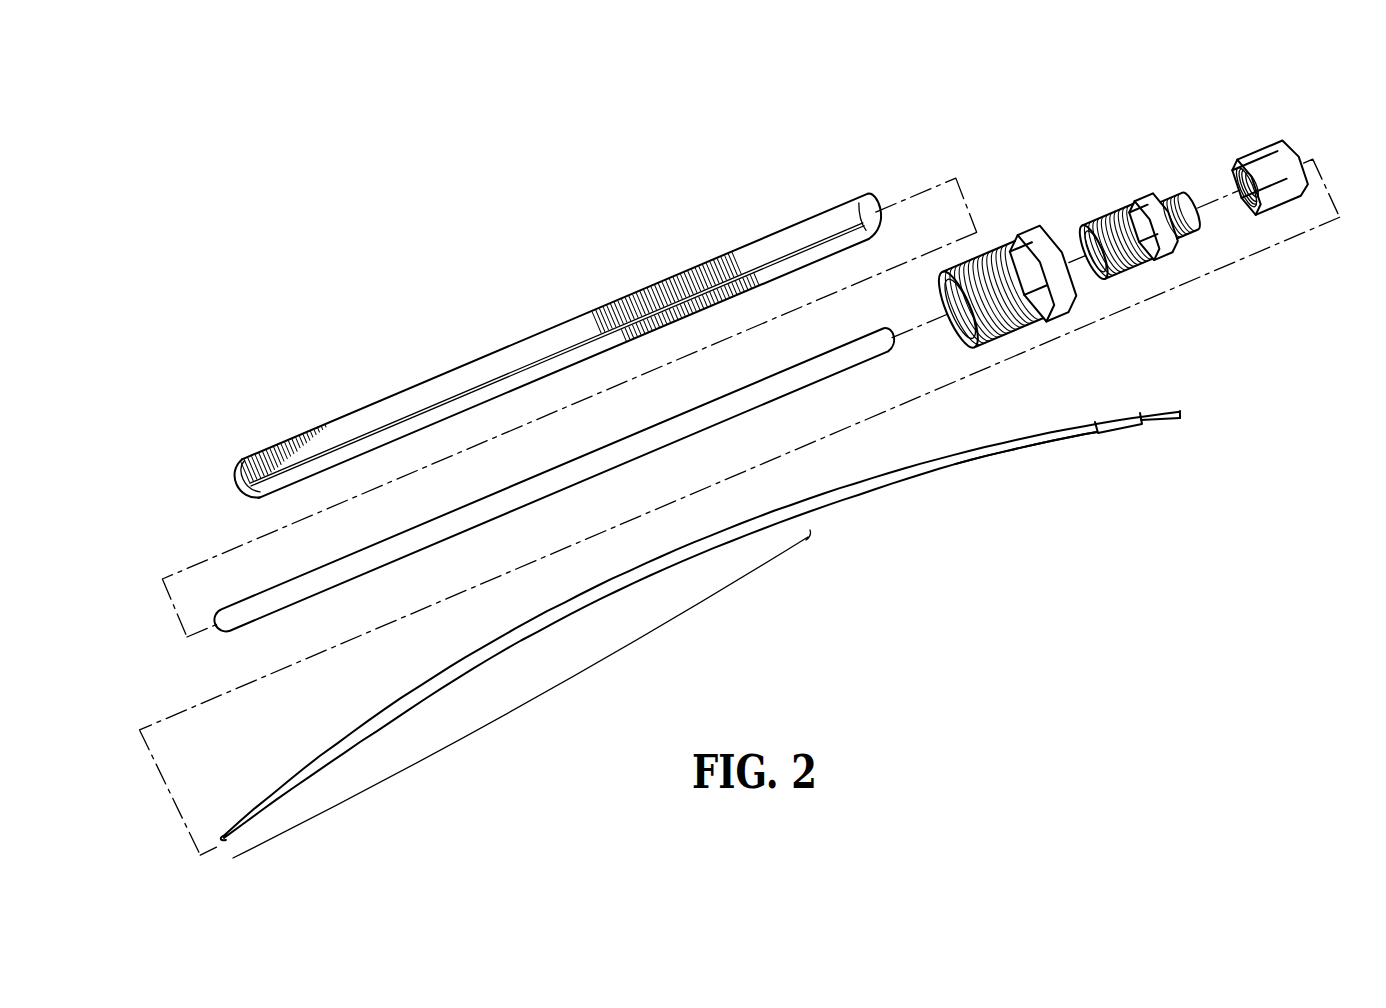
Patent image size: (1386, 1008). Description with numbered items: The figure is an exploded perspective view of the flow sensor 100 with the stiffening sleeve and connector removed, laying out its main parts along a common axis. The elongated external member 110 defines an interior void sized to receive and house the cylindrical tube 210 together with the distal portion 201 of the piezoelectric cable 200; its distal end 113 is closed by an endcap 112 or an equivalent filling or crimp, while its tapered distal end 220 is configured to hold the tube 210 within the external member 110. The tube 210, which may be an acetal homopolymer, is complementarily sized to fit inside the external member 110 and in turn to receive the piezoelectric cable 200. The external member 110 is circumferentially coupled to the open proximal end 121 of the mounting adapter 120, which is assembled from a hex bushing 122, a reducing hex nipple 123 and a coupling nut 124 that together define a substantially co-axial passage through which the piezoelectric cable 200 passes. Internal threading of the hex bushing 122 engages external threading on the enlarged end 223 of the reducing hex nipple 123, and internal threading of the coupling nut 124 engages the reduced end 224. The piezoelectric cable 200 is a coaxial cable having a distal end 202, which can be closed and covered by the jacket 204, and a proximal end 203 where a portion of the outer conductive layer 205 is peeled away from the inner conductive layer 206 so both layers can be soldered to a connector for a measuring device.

The flow sensor 100 is at (410, 172).
The external member 110 is at (580, 316).
The endcap 112 is at (232, 481).
The distal end 113 is at (238, 462).
The mounting adapter 120 is at (1037, 330).
The open proximal end 121 is at (940, 278).
The hex bushing 122 is at (1042, 240).
The reducing hex nipple 123 is at (1137, 188).
The coupling nut 124 is at (1248, 152).
The piezoelectric cable 200 is at (728, 545).
The distal portion 201 is at (528, 703).
The distal end 202 is at (225, 835).
The proximal end 203 is at (1183, 413).
The jacket 204 is at (948, 455).
The outer conductive layer 205 is at (1101, 428).
The inner conductive layer 206 is at (1150, 412).
The cylindrical tube 210 is at (243, 628).
The tapered distal end 220 is at (873, 195).
The enlarged end 223 is at (1100, 278).
The reduced end 224 is at (1200, 226).